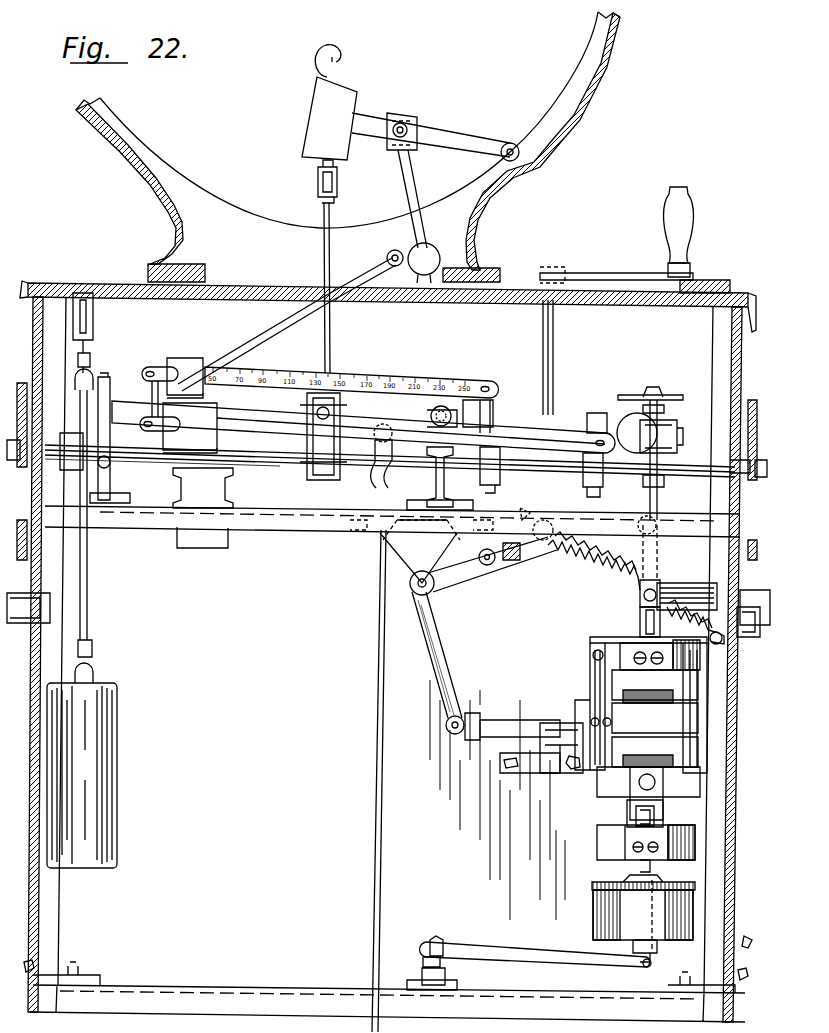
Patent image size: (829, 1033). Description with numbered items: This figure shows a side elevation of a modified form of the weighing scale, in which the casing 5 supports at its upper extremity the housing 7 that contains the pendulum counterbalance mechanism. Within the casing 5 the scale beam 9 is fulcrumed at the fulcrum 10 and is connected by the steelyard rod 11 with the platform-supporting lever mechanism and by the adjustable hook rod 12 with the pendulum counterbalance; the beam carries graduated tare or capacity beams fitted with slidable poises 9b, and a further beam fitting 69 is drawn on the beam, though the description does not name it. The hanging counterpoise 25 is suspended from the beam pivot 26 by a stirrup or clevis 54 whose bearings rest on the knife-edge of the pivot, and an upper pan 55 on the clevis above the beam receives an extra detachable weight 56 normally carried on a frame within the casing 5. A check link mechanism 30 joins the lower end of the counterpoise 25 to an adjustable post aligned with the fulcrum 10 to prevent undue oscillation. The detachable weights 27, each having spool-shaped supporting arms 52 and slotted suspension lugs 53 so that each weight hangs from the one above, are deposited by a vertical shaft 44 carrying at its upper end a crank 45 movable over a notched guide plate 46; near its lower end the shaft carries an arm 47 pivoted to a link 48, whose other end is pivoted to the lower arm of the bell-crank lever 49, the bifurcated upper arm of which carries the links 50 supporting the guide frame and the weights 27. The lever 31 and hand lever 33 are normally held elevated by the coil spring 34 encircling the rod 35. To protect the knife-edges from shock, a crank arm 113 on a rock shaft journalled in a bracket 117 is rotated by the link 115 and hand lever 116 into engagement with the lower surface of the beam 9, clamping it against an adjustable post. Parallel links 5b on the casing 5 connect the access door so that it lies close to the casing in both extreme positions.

The casing 5 is at (733, 893).
The parallel links 5b is at (755, 438).
The housing 7 is at (600, 95).
The scale beam 9 is at (503, 420).
The slidable poises 9b is at (180, 360).
The fulcrum 10 is at (436, 405).
The steelyard rod 11 is at (378, 676).
The adjustable hook rod 12 is at (328, 328).
The hanging counterpoise receiving member 25 is at (603, 908).
The beam pivot 26 is at (630, 425).
The detachable weights 27 is at (600, 840).
The check link mechanism 30 is at (488, 947).
The lever 31 is at (592, 542).
The hand lever 33 is at (466, 576).
The coil spring 34 is at (580, 573).
The rod 35 is at (618, 570).
The vertical shaft 44 is at (556, 338).
The crank 45 is at (596, 275).
The notched guide plate 46 is at (724, 283).
The arm 47 is at (568, 765).
The link 48 is at (500, 728).
The bell-crank lever 49 is at (452, 655).
The links 50 is at (658, 566).
The spool-shaped supporting arms 52 is at (596, 657).
The slotted suspension lugs 53 is at (592, 690).
The stirrup or clevis 54 is at (672, 420).
The upper pan 55 is at (672, 396).
The extra detachable weight 56 is at (582, 503).
The bracket 69 is at (305, 406).
The crank arm 113 is at (130, 472).
The link 115 is at (262, 333).
The hand lever 116 is at (432, 255).
The bracket 117 is at (110, 395).